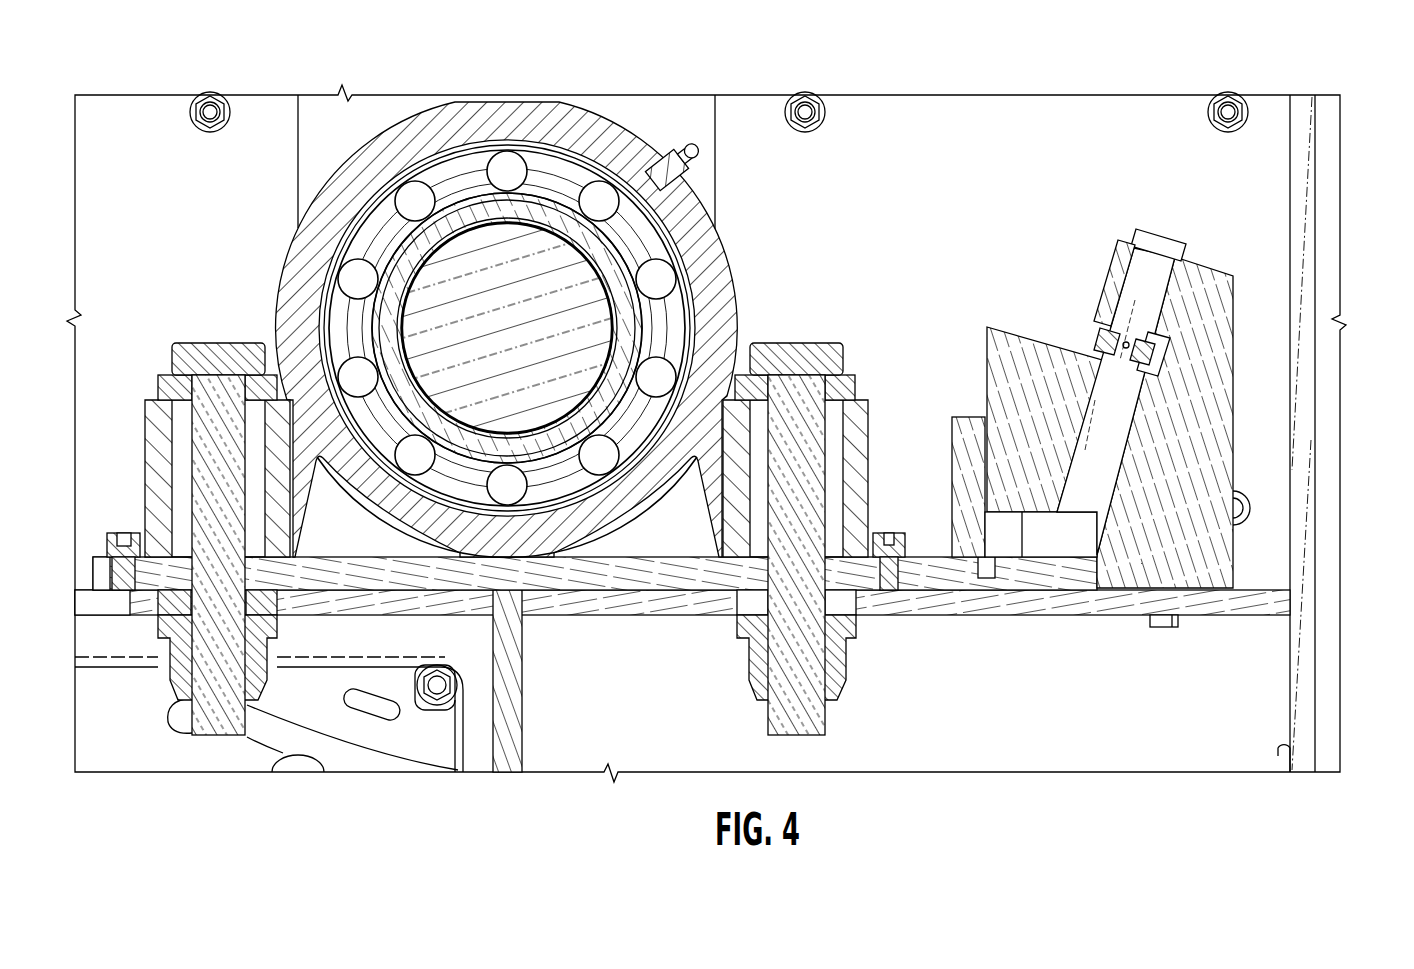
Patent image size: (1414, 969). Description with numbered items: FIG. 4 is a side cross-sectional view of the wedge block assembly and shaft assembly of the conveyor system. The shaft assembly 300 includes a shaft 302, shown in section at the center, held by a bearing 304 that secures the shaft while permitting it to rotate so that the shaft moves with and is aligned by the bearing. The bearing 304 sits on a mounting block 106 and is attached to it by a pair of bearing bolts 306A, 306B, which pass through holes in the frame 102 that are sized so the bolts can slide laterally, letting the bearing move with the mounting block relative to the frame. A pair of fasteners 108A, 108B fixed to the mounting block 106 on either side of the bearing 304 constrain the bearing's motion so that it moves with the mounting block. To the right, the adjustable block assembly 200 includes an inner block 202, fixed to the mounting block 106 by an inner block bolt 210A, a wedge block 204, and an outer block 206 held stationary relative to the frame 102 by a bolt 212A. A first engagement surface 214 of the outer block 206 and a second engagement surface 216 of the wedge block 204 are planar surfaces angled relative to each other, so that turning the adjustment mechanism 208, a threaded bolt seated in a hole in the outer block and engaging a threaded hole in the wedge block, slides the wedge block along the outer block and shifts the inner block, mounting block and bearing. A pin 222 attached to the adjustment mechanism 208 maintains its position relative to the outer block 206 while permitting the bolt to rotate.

The frame 102 is at (588, 603).
The mounting block 106 is at (928, 575).
The fastener 108A is at (897, 533).
The fastener 108B is at (113, 533).
The adjustable block assembly 200 is at (1155, 368).
The inner block 202 is at (966, 425).
The wedge block 204 is at (1018, 355).
The outer block 206 is at (1223, 292).
The adjustment mechanism 208 is at (1153, 248).
The inner block bolt 210A is at (988, 578).
The bolt 212A is at (1162, 627).
The first engagement surface 214 is at (1157, 373).
The second engagement surface 216 is at (1130, 427).
The pin 222 is at (1130, 347).
The shaft assembly 300 is at (495, 278).
The shaft 302 is at (487, 290).
The bearing 304 is at (345, 195).
The bearing bolt 306A is at (215, 697).
The bearing bolt 306B is at (798, 698).